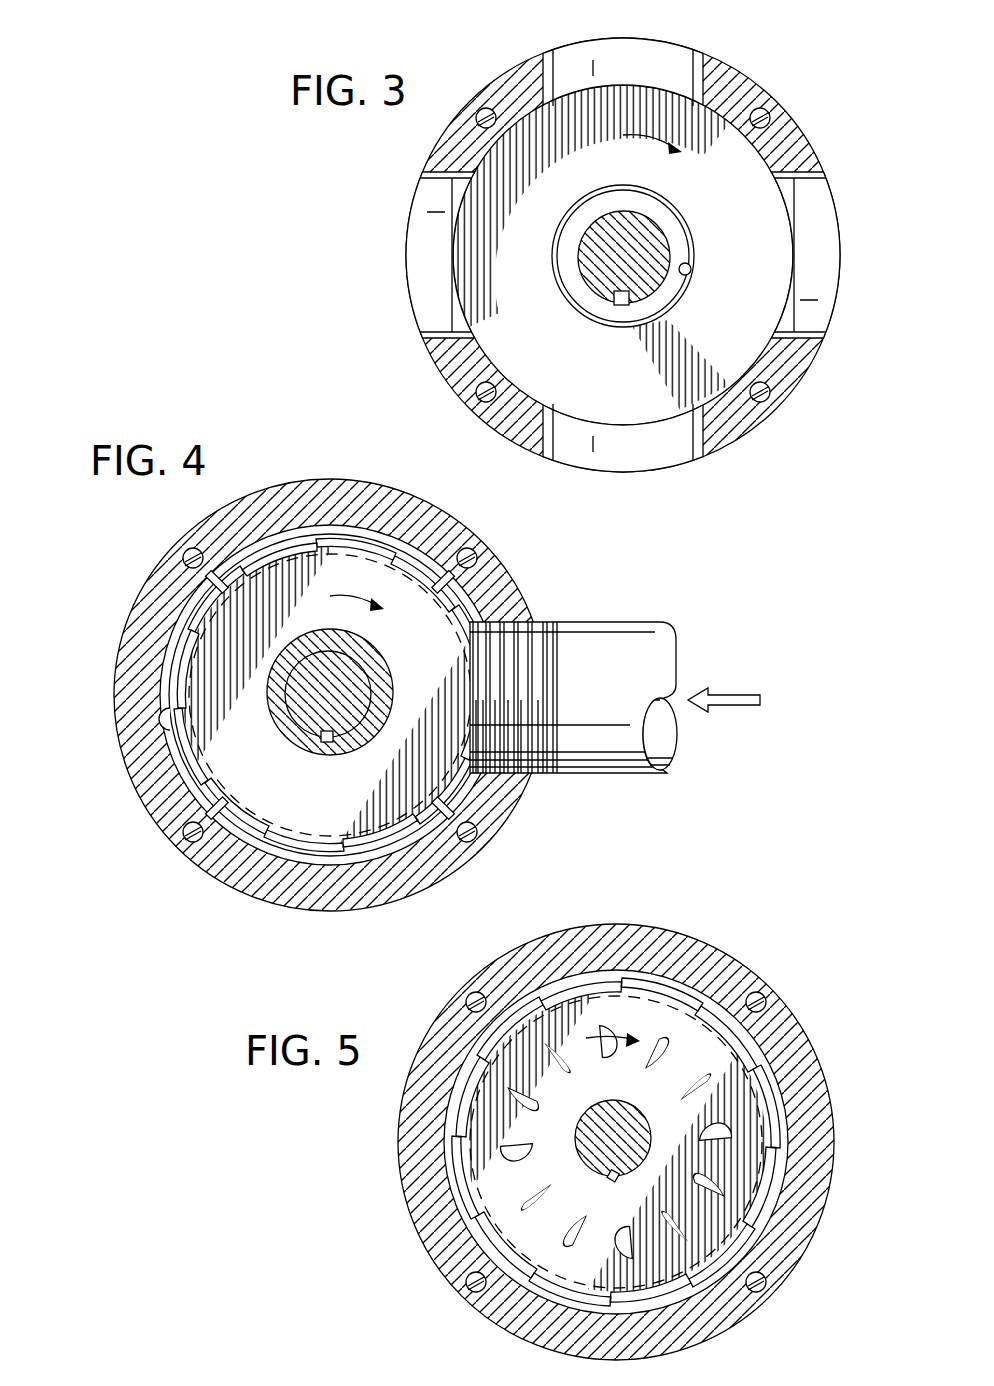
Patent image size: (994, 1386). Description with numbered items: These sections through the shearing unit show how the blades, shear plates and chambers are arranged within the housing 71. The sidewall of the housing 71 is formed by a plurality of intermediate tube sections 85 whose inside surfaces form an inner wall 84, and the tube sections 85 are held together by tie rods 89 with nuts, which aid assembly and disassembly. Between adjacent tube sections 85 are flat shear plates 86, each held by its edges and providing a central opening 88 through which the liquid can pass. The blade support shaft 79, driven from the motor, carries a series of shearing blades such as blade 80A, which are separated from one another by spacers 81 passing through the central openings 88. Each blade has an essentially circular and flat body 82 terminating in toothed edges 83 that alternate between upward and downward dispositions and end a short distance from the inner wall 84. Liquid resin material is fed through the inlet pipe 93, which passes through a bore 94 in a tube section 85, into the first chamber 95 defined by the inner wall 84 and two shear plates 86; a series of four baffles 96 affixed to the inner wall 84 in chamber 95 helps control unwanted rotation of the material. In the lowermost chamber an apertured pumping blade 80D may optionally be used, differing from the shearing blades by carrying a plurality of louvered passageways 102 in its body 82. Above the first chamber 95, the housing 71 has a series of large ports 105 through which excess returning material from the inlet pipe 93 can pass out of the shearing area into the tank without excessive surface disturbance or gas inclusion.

In FIG. 3, the housing 71 is at (430, 146).
In FIG. 4, the housing 71 is at (452, 503).
In FIG. 5, the housing 71 is at (686, 932).
In FIG. 3, the blade support shaft 79 is at (640, 228).
In FIG. 4, the blade support shaft 79 is at (365, 670).
In FIG. 5, the blade support shaft 79 is at (640, 1120).
In FIG. 3, the spacers 81 is at (590, 245).
In FIG. 4, the spacers 81 is at (345, 640).
In FIG. 3, the shear plates 86 is at (750, 312).
In FIG. 4, the shear plates 86 is at (330, 695).
In FIG. 5, the shear plates 86 is at (616, 1142).
In FIG. 3, the central opening 88 is at (690, 263).
In FIG. 3, the tie rods 89 is at (488, 108).
In FIG. 4, the tie rods 89 is at (184, 550).
In FIG. 5, the tie rods 89 is at (762, 992).
In FIG. 3, the ports 105 is at (676, 50).
In FIG. 4, the shearing blade 80A is at (278, 698).
In FIG. 5, the apertured pumping blade 80D is at (605, 1122).
In FIG. 4, the body 82 is at (300, 822).
In FIG. 5, the body 82 is at (470, 1170).
In FIG. 4, the toothed edges 83 is at (300, 540).
In FIG. 5, the toothed edges 83 is at (600, 985).
In FIG. 4, the inner wall 84 is at (165, 725).
In FIG. 4, the intermediate tube sections 85 is at (130, 643).
In FIG. 4, the inlet pipe 93 is at (610, 762).
In FIG. 4, the bore 94 is at (540, 628).
In FIG. 4, the first chamber 95 is at (152, 690).
In FIG. 4, the baffles 96 is at (220, 572).
In FIG. 5, the louvered passageways 102 is at (735, 1130).